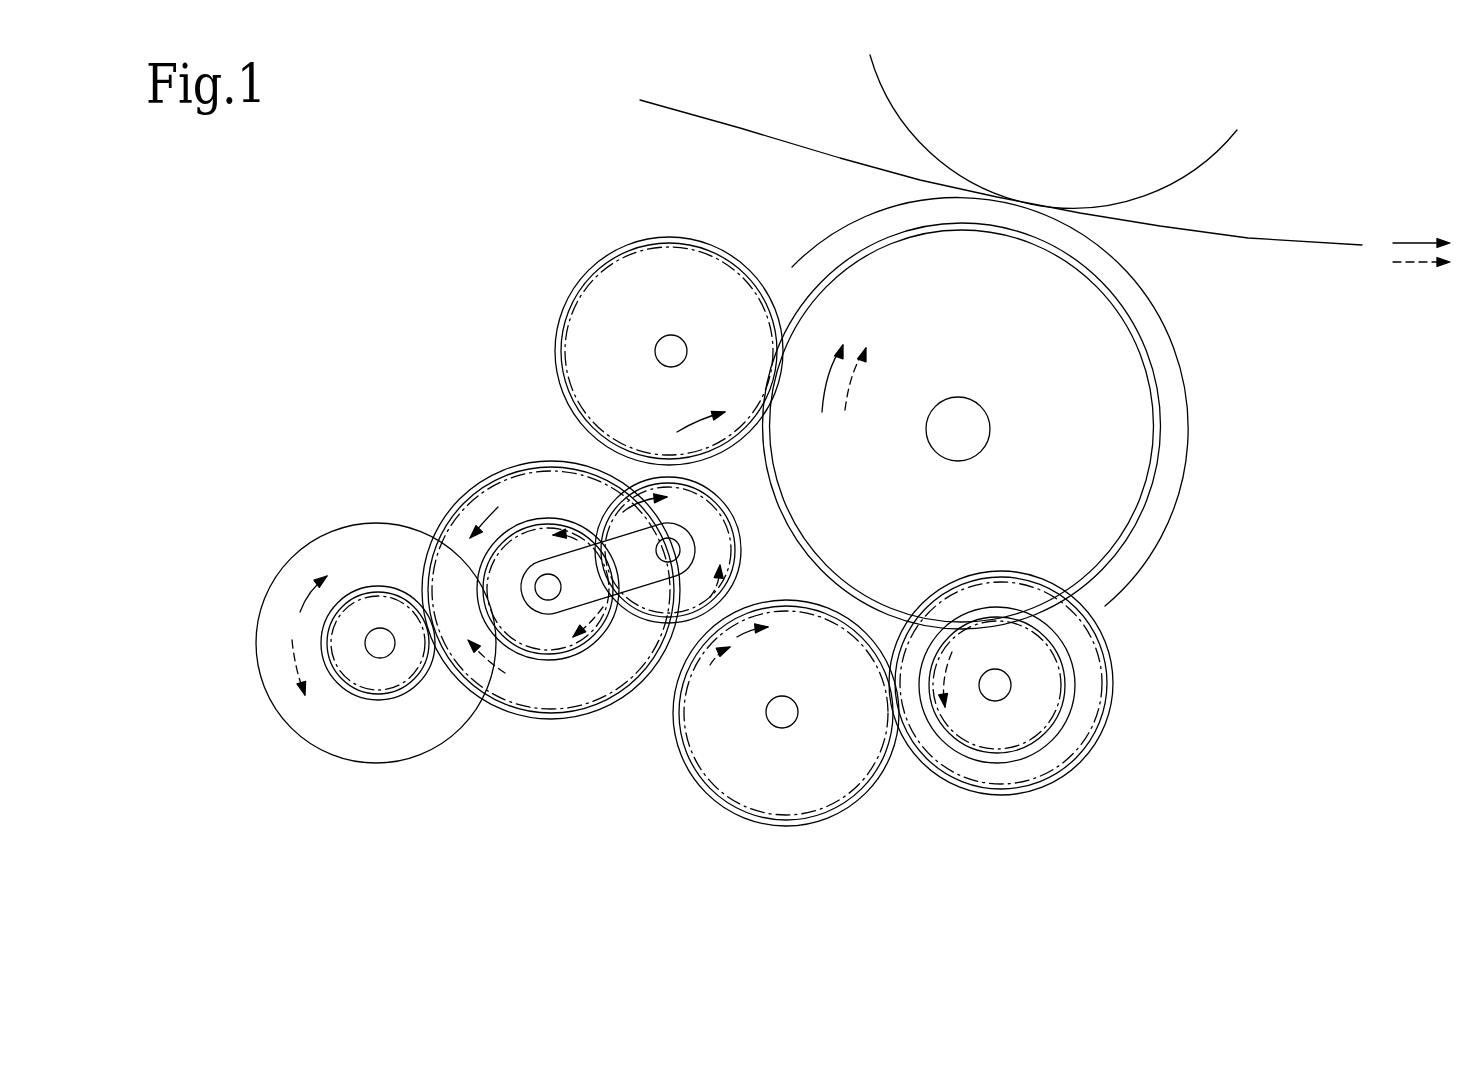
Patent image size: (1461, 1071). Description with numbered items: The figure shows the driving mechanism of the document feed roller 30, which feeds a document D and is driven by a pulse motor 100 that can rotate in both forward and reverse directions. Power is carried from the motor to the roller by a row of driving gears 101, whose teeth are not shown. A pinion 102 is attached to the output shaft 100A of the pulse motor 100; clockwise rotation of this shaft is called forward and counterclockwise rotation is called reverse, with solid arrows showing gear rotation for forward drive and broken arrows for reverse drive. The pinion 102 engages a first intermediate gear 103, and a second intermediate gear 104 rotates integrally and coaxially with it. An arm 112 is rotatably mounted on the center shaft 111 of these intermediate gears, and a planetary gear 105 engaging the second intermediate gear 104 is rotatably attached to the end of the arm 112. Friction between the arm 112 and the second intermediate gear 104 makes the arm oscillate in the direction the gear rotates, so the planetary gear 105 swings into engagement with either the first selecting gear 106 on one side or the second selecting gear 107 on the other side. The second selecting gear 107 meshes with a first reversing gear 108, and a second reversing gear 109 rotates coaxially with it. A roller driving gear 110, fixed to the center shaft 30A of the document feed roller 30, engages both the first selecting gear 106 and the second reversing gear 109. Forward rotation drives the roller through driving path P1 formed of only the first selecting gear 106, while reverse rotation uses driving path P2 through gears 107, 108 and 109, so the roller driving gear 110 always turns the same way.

The document feed roller 30 is at (1028, 413).
The center shaft 30A is at (975, 420).
The roller driving gear 110 is at (1105, 517).
The first selecting gear 106 is at (690, 260).
The planetary gear 105 is at (565, 560).
The first intermediate gear 103 is at (500, 462).
The second intermediate gear 104 is at (553, 643).
The center shaft 111 is at (533, 587).
The arm 112 is at (645, 625).
The second selecting gear 107 is at (838, 778).
The first reversing gear 108 is at (988, 775).
The second reversing gear 109 is at (1064, 685).
The pulse motor 100 is at (345, 704).
The pinion 102 is at (397, 687).
The output shaft 100A is at (387, 648).
The row of driving gears 101 is at (565, 626).
The driving path P1 is at (669, 308).
The driving path P2 is at (941, 746).
The document D is at (1248, 238).